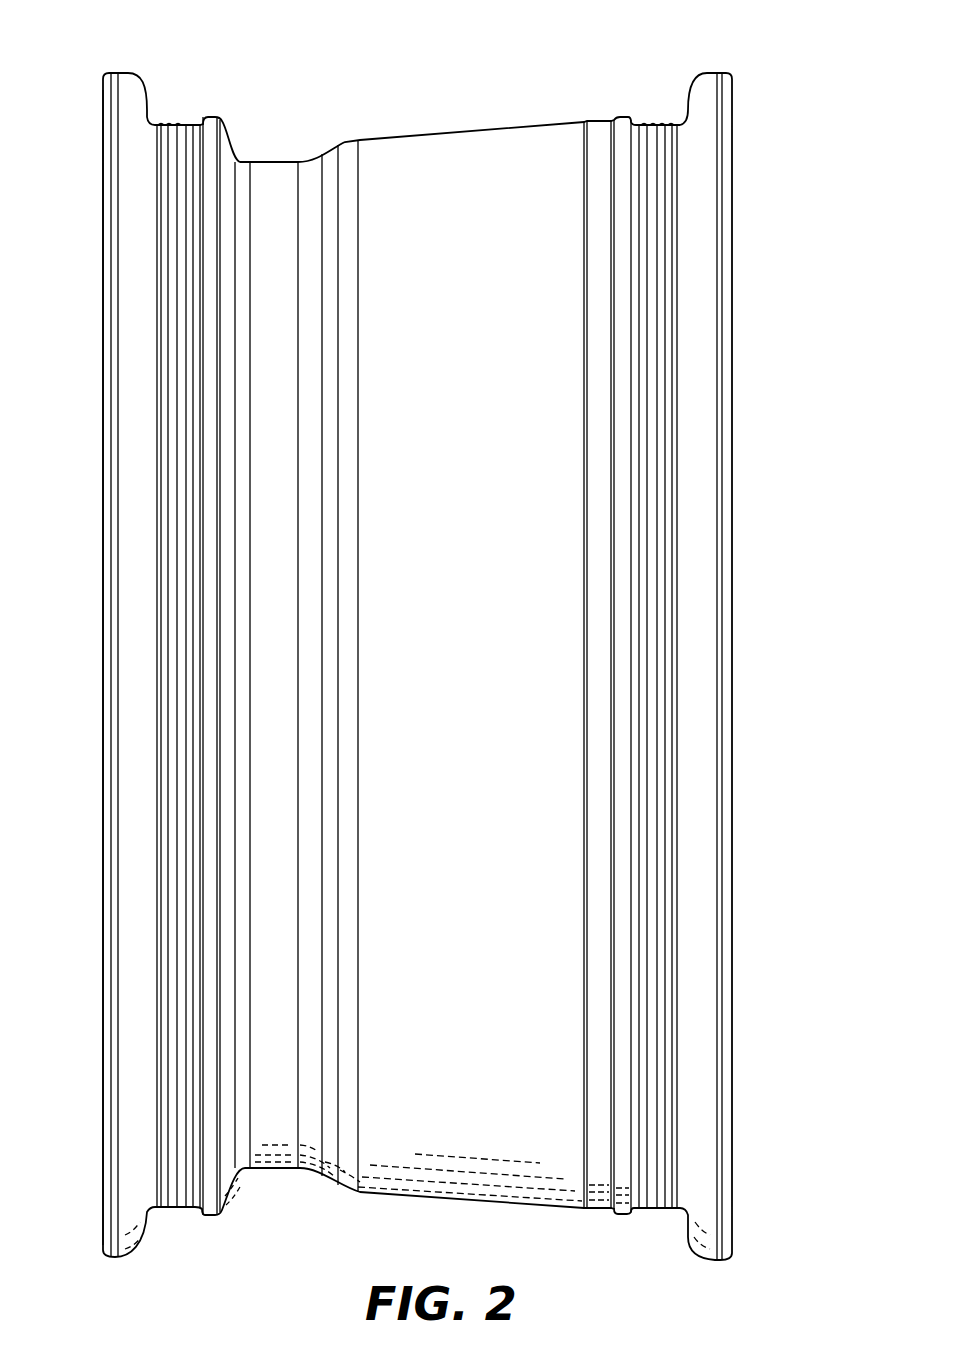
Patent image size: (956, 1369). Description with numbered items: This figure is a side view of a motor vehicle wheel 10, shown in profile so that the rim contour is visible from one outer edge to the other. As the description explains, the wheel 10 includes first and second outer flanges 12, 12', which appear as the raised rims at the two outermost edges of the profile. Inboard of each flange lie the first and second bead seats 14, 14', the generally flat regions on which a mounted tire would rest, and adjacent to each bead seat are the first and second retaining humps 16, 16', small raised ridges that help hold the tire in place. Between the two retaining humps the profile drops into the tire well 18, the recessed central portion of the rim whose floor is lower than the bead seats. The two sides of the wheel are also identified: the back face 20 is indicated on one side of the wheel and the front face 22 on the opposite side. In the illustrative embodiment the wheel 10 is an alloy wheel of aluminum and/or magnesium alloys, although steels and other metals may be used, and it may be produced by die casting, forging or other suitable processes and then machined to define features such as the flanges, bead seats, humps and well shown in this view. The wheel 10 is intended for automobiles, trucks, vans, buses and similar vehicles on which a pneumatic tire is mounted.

The motor vehicle wheel 10 is at (757, 588).
The first outer flange 12 is at (740, 661).
The second outer flange 12' is at (108, 643).
The first bead seat 14 is at (654, 616).
The second bead seat 14' is at (174, 612).
The first retaining hump 16 is at (610, 640).
The second retaining hump 16' is at (227, 633).
The tire well 18 is at (305, 100).
The back face 20 is at (751, 497).
The front face 22 is at (85, 595).